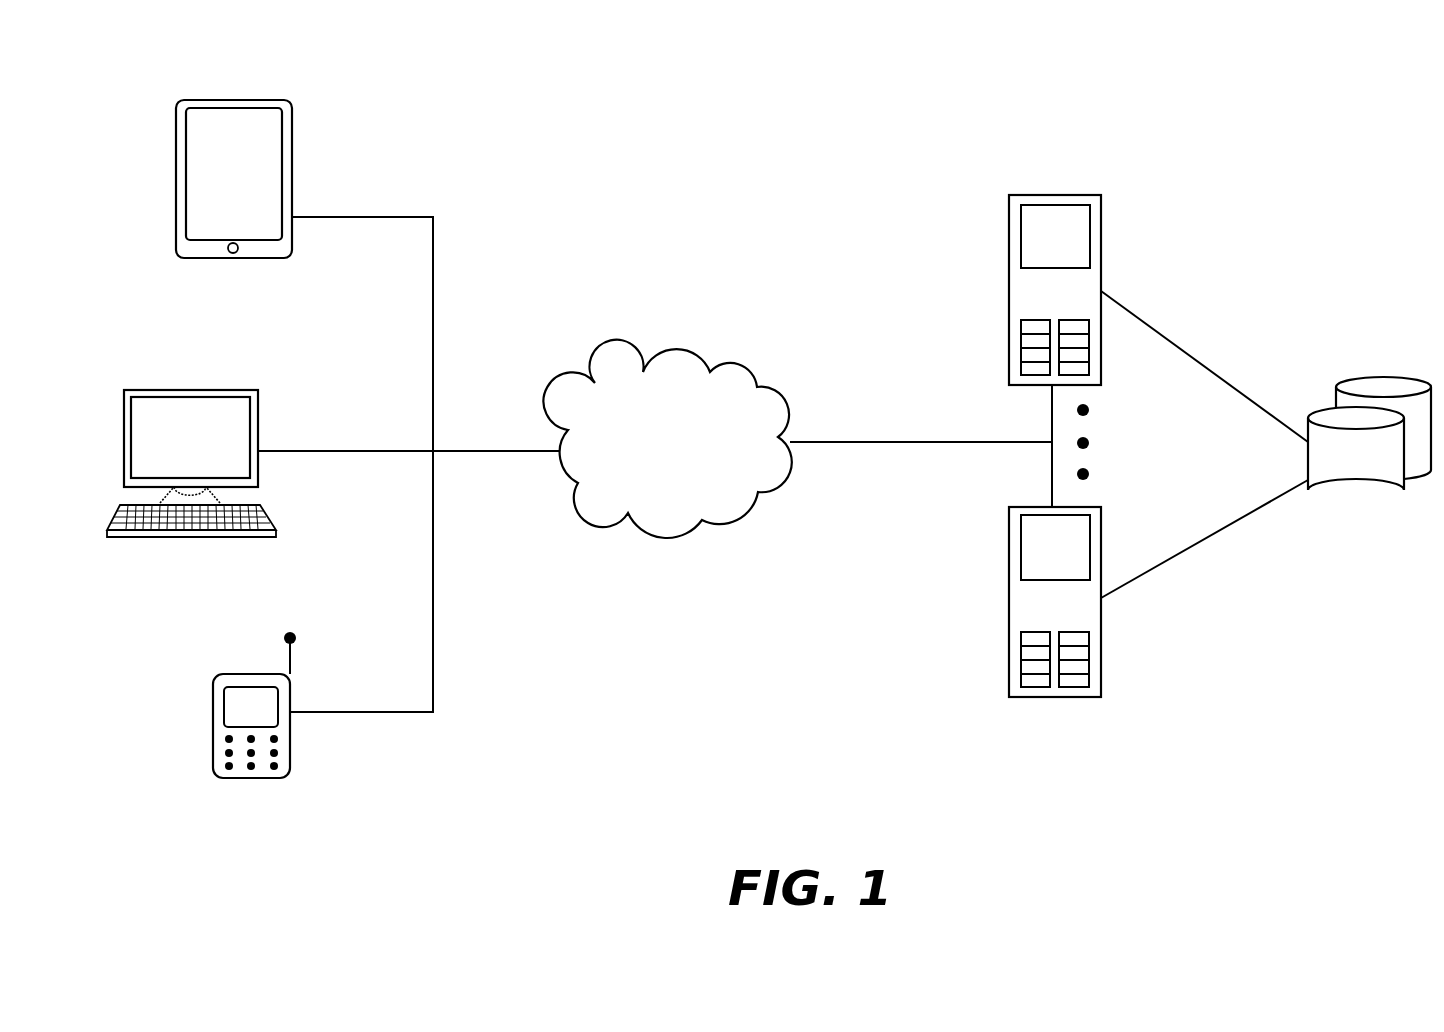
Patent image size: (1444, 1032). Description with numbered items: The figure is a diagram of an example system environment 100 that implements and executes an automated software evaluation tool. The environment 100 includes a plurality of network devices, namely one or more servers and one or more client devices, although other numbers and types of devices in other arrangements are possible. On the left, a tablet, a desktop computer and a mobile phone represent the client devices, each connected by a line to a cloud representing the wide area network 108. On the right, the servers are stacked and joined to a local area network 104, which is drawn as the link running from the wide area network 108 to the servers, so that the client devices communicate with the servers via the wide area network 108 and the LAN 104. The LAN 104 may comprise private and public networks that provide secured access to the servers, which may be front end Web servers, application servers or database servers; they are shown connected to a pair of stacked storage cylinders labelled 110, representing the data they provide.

The system environment 100 is at (790, 66).
The local area network 104 is at (862, 442).
The wide area network 108 is at (651, 471).
The data store 110 is at (1325, 478).